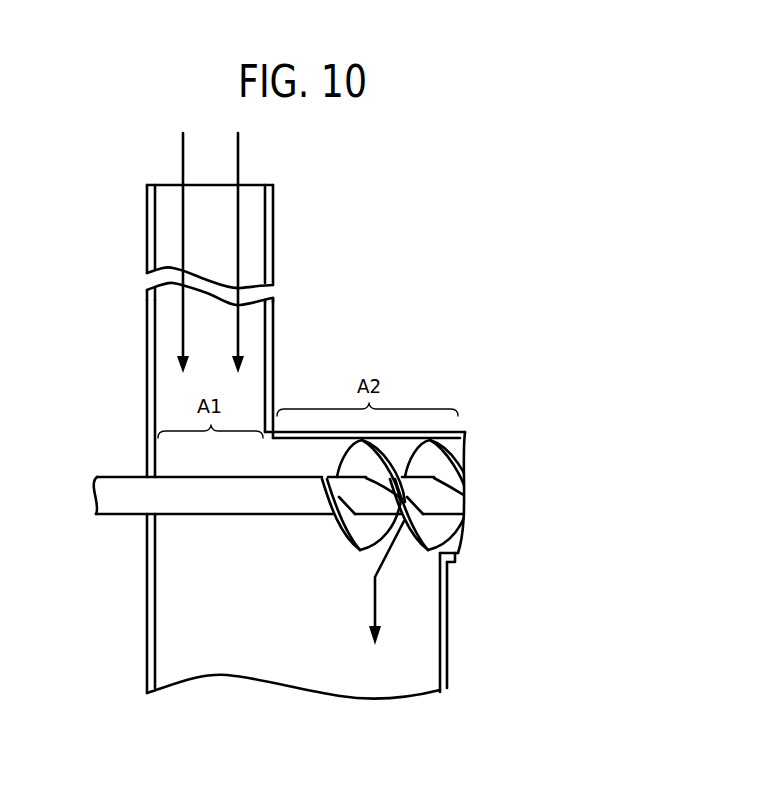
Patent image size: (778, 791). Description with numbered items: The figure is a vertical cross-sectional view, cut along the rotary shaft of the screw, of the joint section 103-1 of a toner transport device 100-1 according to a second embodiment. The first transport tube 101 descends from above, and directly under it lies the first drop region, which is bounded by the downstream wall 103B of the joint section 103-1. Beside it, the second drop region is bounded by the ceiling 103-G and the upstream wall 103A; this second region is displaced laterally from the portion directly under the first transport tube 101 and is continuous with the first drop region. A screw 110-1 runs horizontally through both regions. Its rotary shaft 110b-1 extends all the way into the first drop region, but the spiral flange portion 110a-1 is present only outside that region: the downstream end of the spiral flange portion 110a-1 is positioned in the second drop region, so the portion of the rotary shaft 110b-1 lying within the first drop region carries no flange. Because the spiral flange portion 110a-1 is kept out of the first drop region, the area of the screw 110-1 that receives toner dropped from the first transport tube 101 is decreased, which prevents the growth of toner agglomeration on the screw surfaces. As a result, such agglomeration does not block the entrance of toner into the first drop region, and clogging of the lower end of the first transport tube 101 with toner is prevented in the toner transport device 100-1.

The first transport tube 101 is at (273, 217).
The toner transport device 100-1 is at (305, 479).
The joint section 103-1 is at (305, 498).
The upstream wall 103A is at (447, 650).
The downstream wall 103B is at (147, 650).
The ceiling 103-G is at (445, 432).
The screw 110-1 is at (283, 516).
The spiral flange portion 110a-1 is at (338, 532).
The rotary shaft 110b-1 is at (320, 507).